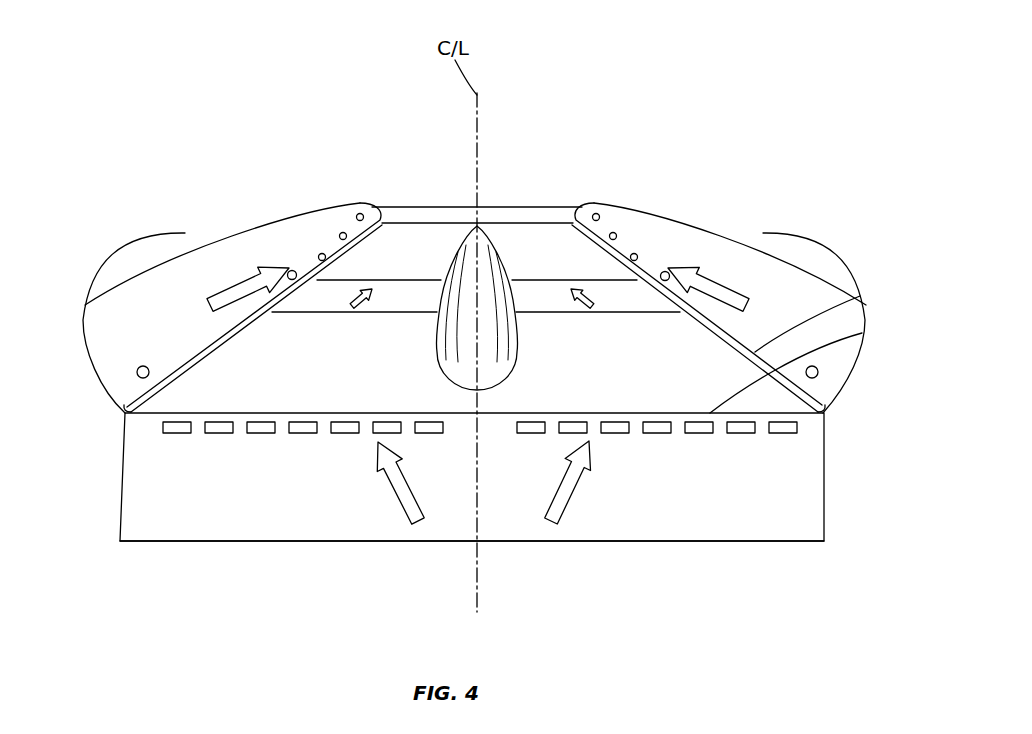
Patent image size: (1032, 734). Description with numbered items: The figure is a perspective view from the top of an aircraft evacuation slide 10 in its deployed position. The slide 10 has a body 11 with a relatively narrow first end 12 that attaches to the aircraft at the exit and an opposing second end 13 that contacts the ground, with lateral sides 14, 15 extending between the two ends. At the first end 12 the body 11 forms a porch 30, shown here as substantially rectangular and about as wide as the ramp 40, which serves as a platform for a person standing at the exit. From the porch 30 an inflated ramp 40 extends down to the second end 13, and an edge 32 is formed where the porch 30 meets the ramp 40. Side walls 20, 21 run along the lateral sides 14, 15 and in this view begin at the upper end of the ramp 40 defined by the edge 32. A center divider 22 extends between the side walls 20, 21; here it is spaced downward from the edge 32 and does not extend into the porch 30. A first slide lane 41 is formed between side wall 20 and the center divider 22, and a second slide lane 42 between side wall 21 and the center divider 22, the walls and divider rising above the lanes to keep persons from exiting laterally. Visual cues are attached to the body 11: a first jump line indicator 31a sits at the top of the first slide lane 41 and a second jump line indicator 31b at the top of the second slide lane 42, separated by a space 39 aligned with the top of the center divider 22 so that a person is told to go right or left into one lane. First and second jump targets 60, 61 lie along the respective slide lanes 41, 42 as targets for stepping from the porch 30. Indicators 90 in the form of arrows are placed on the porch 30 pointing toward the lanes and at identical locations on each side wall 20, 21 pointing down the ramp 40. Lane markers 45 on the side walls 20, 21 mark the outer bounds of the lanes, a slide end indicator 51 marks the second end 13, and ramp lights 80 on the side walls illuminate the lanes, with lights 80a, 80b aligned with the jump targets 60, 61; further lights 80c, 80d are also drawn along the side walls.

The slide 10 is at (620, 78).
The body 11 is at (580, 257).
The first end 12 is at (705, 543).
The second end 13 is at (470, 272).
The lateral side 14 is at (222, 238).
The lateral side 15 is at (786, 248).
The side wall 20 is at (108, 268).
The side wall 21 is at (820, 292).
The center divider 22 is at (495, 207).
The porch 30 is at (795, 488).
The first jump line indicator 31a is at (178, 434).
The second jump line indicator 31b is at (782, 434).
The edge 32 is at (862, 333).
The space 39 is at (493, 424).
The ramp 40 is at (618, 222).
The first slide lane 41 is at (382, 242).
The second slide lane 42 is at (553, 240).
The lane marker 45 is at (390, 242).
The slide end indicator 51 is at (513, 222).
The first jump target 60 is at (323, 293).
The second jump target 61 is at (631, 293).
The ramp light 80 is at (138, 368).
The ramp light 80a is at (290, 270).
The ramp light 80b is at (668, 271).
The hole 80c is at (358, 214).
The hole 80d is at (597, 214).
The indicator 90 is at (200, 350).